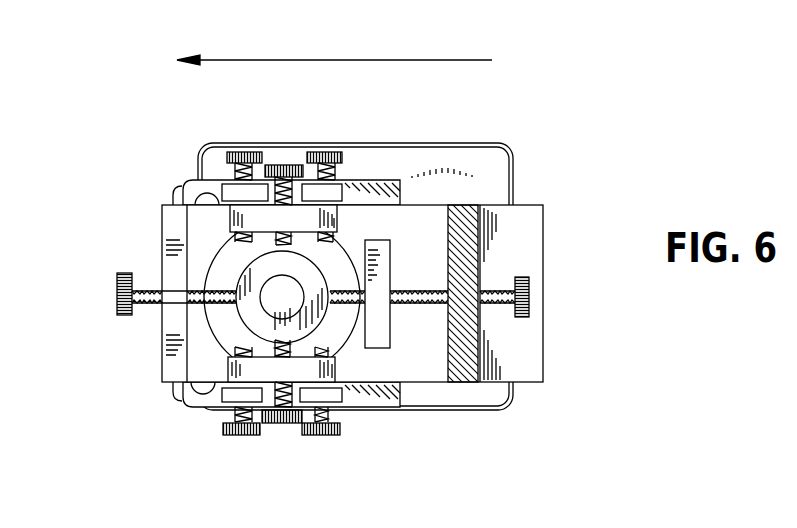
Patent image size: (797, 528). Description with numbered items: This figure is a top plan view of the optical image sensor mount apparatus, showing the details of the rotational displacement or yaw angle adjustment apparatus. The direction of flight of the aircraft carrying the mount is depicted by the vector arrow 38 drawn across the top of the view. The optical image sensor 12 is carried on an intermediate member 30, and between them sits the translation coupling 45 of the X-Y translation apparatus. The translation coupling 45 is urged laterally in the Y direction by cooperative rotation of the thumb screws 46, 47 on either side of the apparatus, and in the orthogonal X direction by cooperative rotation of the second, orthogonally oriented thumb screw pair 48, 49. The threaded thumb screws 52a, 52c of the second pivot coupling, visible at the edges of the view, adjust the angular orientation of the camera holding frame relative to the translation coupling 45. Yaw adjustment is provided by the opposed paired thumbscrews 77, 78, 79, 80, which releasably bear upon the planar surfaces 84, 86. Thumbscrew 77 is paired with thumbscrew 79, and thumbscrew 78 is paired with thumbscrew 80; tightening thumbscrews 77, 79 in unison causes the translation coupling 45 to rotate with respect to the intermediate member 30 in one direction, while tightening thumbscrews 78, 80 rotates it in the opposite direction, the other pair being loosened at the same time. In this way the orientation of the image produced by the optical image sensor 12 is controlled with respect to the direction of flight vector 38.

The optical image sensor 12 is at (408, 143).
The intermediate member 30 is at (480, 338).
The direction of flight vector arrow 38 is at (405, 60).
The translation coupling 45 is at (327, 302).
The thumb screw 46 is at (116, 292).
The thumb screw 47 is at (530, 290).
The thumb screw 48 is at (282, 432).
The thumb screw 49 is at (284, 165).
The threaded thumb screw 52a is at (176, 385).
The threaded thumb screw 52c is at (175, 203).
The thumbscrew 77 is at (322, 151).
The thumbscrew 78 is at (340, 440).
The thumbscrew 79 is at (233, 436).
The thumbscrew 80 is at (240, 151).
The planar surface 84 is at (244, 255).
The planar surface 86 is at (244, 335).